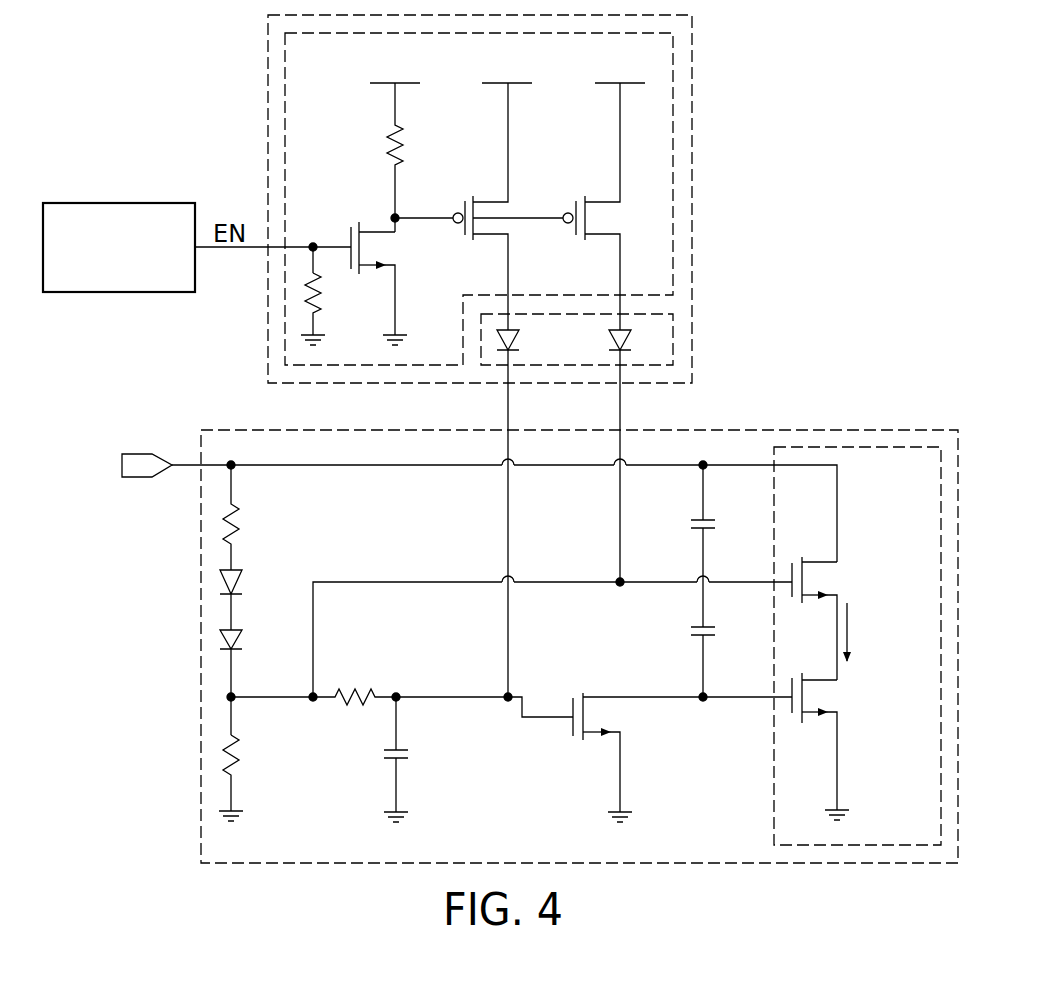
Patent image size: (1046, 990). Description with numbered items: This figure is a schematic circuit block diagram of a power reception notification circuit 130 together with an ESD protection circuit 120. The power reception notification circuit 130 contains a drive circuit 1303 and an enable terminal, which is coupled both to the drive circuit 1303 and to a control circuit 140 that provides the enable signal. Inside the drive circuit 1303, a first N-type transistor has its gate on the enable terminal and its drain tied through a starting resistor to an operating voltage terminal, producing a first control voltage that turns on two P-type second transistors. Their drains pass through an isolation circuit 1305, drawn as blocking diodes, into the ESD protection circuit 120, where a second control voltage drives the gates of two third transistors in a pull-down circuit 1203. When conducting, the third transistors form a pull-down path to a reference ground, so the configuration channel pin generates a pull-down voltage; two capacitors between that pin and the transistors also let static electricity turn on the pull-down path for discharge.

The control circuit 140 is at (120, 203).
The power reception notification circuit 130 is at (692, 247).
The drive circuit 1303 is at (673, 163).
The isolation circuit 1305 is at (673, 337).
The ESD protection circuit 120 is at (755, 430).
The pull-down circuit 1203 is at (860, 447).